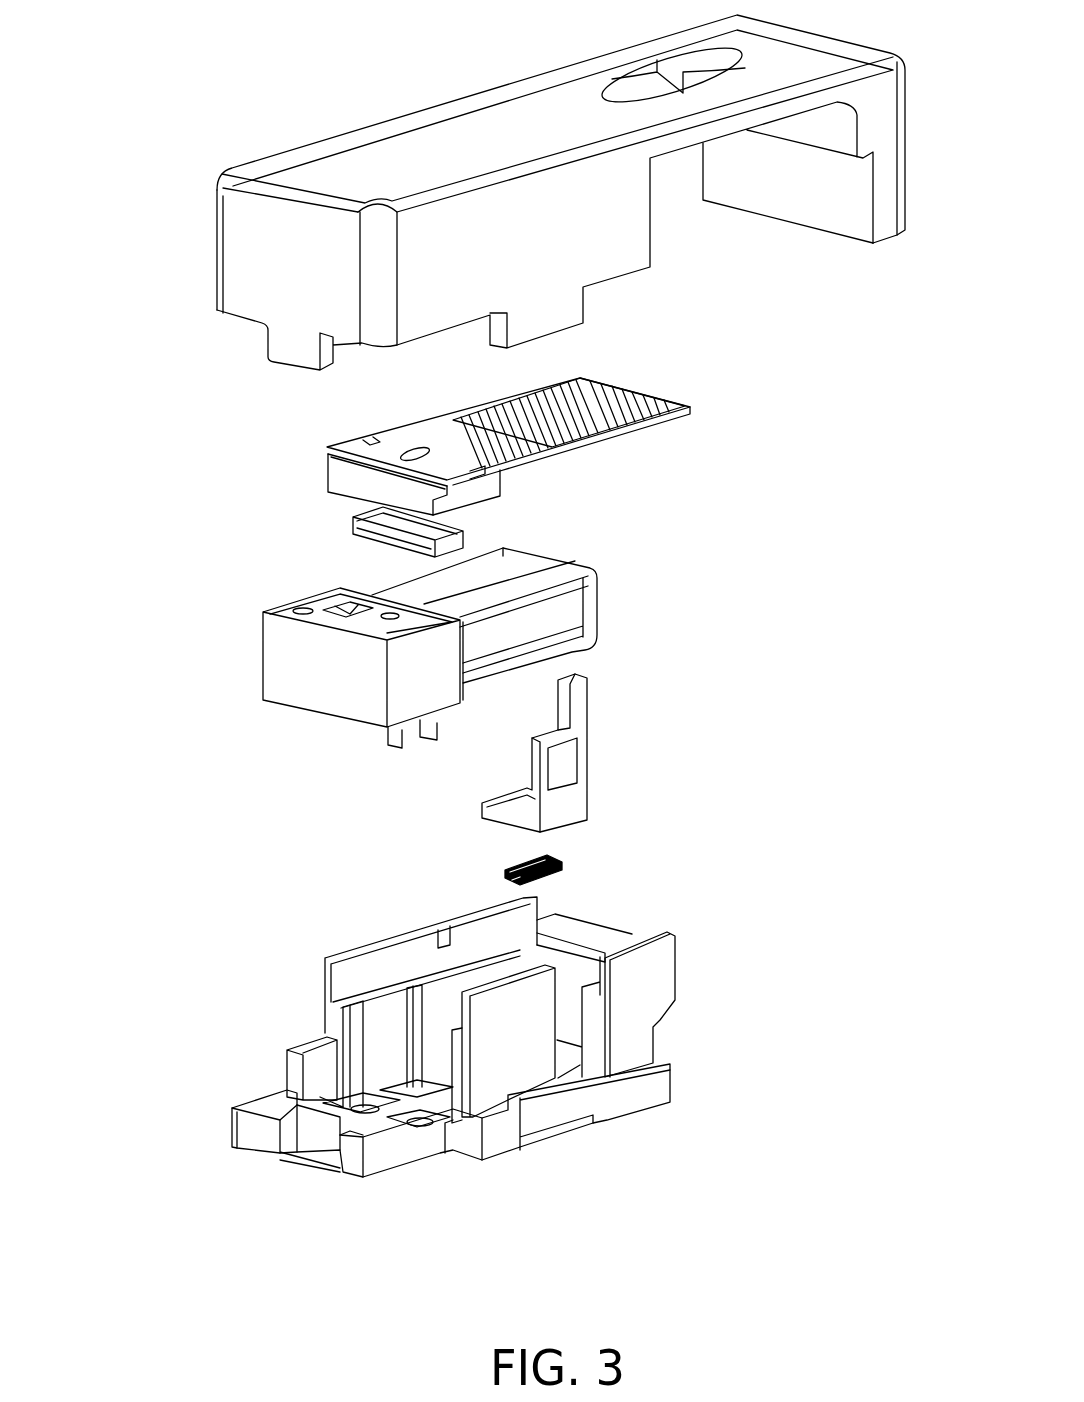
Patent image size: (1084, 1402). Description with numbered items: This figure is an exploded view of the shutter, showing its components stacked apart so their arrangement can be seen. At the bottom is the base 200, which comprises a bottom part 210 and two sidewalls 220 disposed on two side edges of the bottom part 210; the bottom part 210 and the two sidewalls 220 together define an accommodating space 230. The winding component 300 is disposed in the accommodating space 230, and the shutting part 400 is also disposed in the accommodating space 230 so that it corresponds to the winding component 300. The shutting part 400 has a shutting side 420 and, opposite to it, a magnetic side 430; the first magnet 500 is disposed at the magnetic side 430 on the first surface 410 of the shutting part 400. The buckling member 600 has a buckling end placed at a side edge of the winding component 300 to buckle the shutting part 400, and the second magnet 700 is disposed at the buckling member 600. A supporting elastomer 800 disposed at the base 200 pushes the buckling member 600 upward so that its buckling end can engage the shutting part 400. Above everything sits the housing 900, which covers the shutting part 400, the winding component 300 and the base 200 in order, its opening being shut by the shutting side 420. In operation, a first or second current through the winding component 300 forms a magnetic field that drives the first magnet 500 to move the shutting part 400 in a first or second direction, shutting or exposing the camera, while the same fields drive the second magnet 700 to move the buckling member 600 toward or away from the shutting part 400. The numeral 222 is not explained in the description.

The housing 900 is at (275, 118).
The shutting part 400 is at (543, 408).
The first surface 410 is at (607, 440).
The shutting side 420 is at (600, 393).
The magnetic side 430 is at (387, 443).
The first magnet 500 is at (333, 528).
The winding component 300 is at (240, 660).
The buckling member 600 is at (538, 742).
The second magnet 700 is at (557, 768).
The supporting elastomer 800 is at (586, 866).
The base 200 is at (479, 1053).
The bottom part 210 is at (431, 1150).
The sidewalls 220 is at (343, 978).
The partition rib 222 is at (430, 975).
The accommodating space 230 is at (433, 1030).